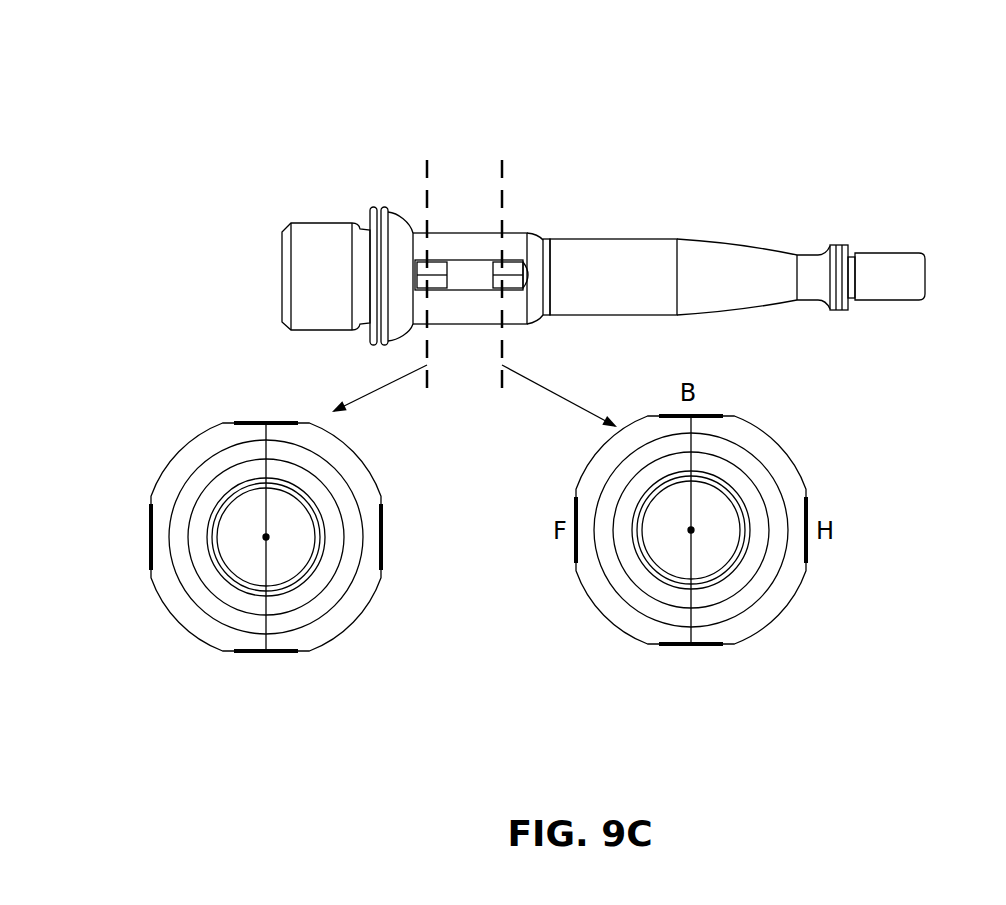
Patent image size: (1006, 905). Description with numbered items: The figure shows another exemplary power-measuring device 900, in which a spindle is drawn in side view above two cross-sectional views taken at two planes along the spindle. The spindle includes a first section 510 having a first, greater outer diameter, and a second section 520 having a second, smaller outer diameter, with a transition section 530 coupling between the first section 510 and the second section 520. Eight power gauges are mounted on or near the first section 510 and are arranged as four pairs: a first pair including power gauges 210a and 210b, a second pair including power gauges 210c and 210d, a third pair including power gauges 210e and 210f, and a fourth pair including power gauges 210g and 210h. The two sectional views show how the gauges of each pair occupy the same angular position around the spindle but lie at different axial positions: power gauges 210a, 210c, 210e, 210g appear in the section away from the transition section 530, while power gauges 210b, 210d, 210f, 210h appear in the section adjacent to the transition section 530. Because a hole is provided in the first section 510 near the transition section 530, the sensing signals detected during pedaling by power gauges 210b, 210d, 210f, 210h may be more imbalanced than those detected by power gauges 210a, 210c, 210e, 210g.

The power-measuring device 900 is at (702, 139).
The first section 510 is at (467, 240).
The second section 520 is at (640, 275).
The transition section 530 is at (537, 225).
The power gauge 210a is at (247, 421).
The power gauge 210b is at (709, 414).
The power gauge 210c is at (278, 653).
The power gauge 210d is at (673, 646).
The power gauge 210e is at (149, 550).
The power gauge 210f is at (574, 533).
The power gauge 210g is at (383, 533).
The power gauge 210h is at (808, 517).